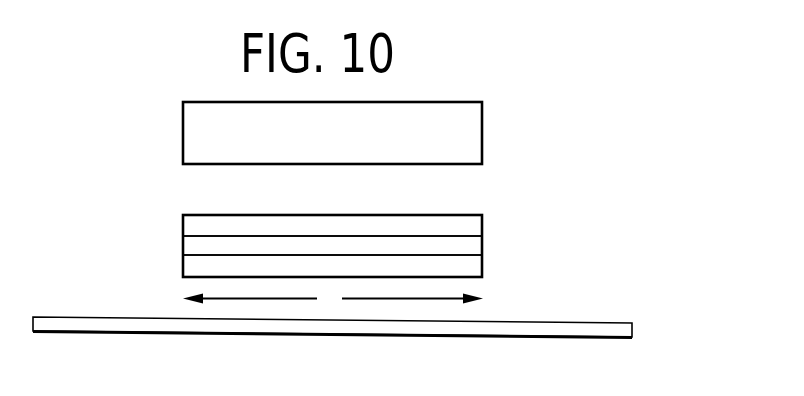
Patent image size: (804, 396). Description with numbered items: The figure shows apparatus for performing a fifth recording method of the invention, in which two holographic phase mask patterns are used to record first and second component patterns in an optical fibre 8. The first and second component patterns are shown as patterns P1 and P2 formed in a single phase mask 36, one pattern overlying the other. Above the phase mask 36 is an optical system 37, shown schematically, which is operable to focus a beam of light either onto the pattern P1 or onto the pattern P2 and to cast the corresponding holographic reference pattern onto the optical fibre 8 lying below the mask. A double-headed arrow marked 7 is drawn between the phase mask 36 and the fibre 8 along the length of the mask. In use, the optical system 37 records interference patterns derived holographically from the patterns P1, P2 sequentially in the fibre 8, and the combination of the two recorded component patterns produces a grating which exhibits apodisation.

The optical system 37 is at (482, 133).
The phase mask 36 is at (183, 242).
The pattern P1 is at (470, 225).
The pattern P2 is at (470, 267).
The scanning width 7 is at (333, 300).
The optical fibre 8 is at (607, 323).